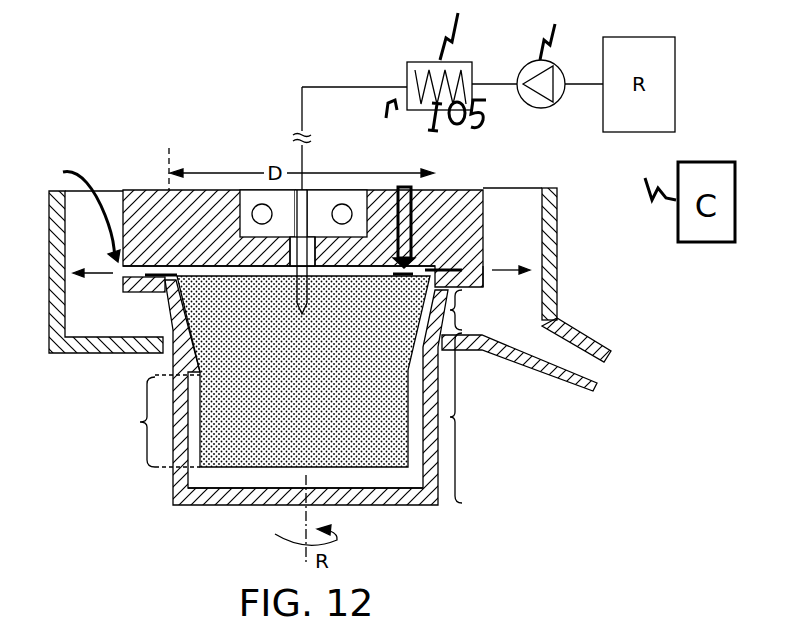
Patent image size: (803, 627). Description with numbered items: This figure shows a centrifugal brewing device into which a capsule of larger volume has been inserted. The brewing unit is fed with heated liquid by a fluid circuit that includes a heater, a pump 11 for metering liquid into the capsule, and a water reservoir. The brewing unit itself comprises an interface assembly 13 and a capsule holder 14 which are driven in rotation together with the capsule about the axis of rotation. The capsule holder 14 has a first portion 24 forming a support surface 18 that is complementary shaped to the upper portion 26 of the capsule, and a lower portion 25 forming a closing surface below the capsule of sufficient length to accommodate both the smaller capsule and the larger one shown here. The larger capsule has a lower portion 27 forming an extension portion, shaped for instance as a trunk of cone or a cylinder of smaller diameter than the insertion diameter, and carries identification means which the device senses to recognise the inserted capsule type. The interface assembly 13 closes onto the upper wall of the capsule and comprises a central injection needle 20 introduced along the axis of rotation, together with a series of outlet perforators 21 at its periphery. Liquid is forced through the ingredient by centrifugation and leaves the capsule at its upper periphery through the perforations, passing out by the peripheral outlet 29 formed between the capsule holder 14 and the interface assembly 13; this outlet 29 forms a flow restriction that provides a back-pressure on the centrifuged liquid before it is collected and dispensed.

The pump 11 is at (387, 467).
The interface assembly 13 is at (141, 184).
The capsule holder 14 is at (173, 484).
The support surface 18 is at (445, 278).
The central injection needle 20 is at (393, 272).
The outlet perforators 21 is at (437, 280).
The first portion 24 is at (470, 310).
The lower portion 25 is at (471, 418).
The upper portion 26 is at (187, 305).
The lower portion 27 is at (156, 421).
The peripheral outlet 29 is at (76, 201).